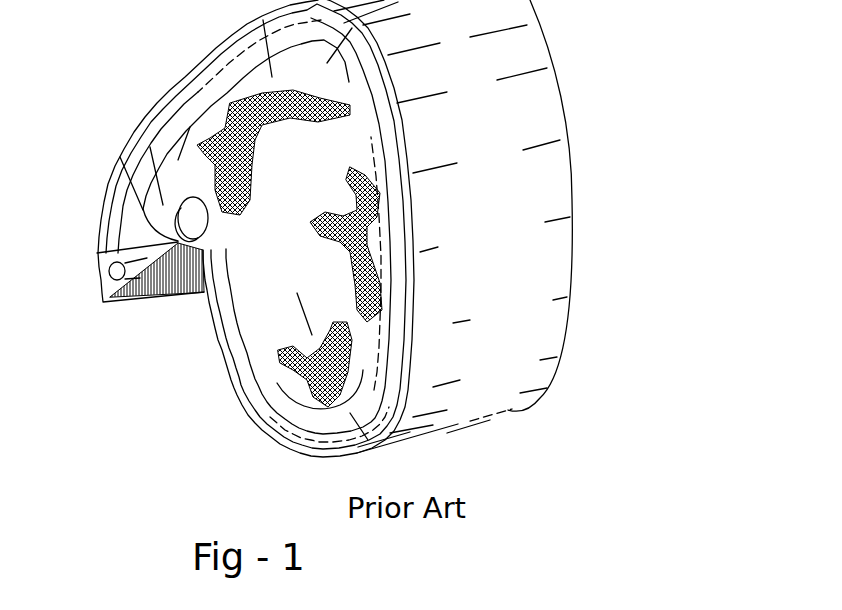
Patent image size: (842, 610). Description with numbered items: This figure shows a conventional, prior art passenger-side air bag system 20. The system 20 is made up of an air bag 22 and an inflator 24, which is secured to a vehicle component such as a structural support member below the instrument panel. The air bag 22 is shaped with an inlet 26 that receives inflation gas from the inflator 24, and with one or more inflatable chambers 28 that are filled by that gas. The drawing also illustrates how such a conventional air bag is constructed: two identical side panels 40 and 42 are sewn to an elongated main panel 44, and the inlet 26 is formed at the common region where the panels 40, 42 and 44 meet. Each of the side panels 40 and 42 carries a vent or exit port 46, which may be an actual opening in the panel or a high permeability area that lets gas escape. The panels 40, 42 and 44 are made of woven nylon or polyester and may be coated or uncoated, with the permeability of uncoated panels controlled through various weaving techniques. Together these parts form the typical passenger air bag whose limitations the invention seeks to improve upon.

The passenger-side air bag system 20 is at (622, 27).
The air bag 22 is at (566, 125).
The inflator 24 is at (117, 280).
The inlet 26 is at (107, 258).
The inflatable chamber 28 is at (270, 303).
The side panel 40 is at (263, 380).
The side panel 42 is at (557, 172).
The main panel 44 is at (507, 343).
The vent 46 is at (208, 222).